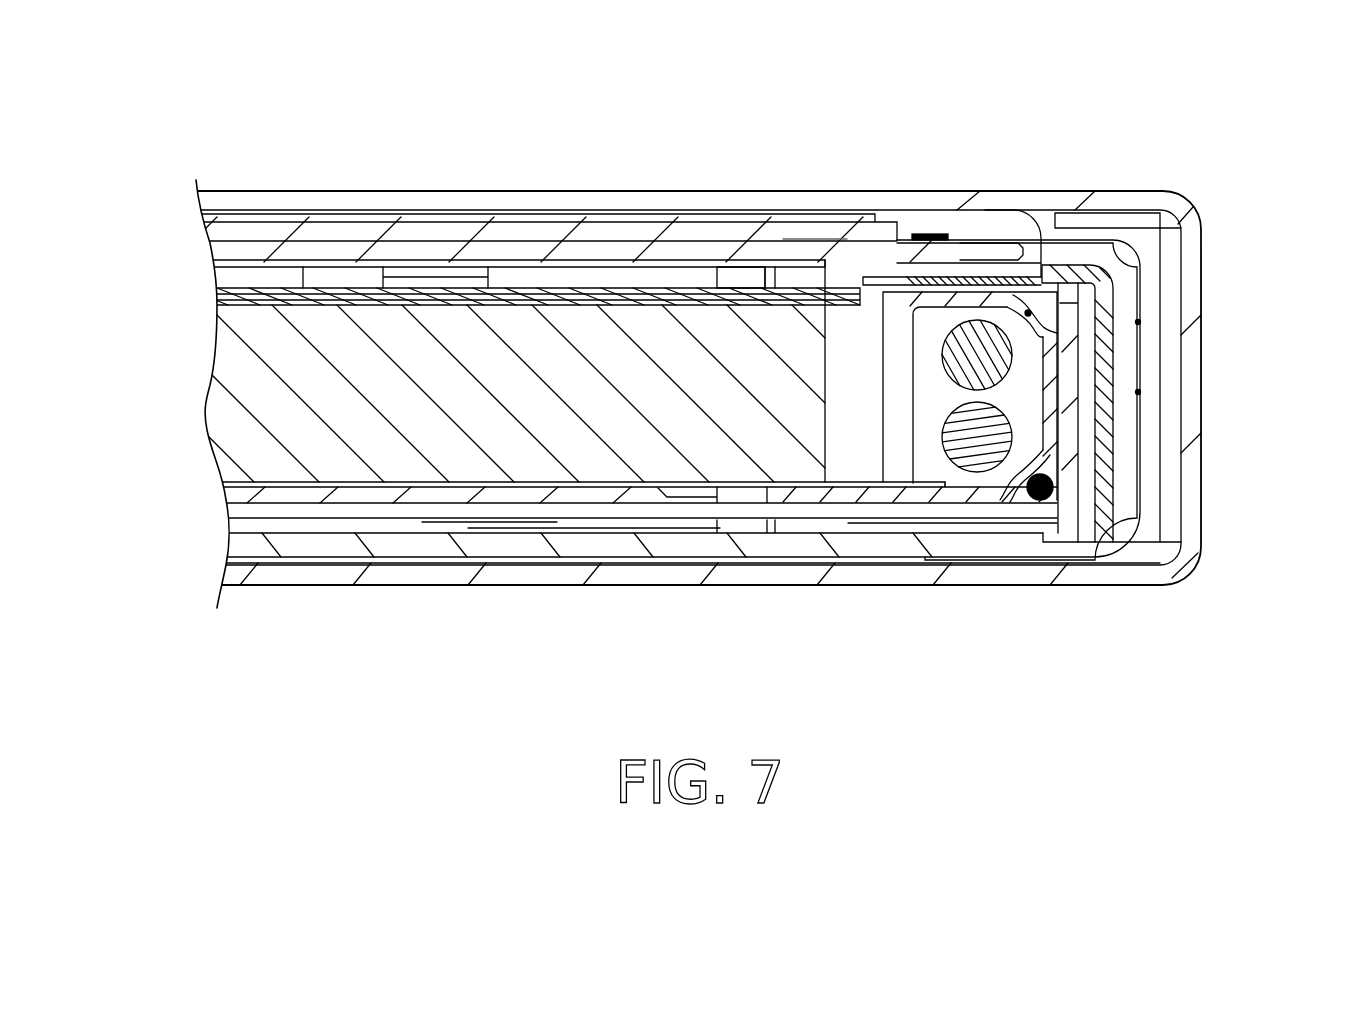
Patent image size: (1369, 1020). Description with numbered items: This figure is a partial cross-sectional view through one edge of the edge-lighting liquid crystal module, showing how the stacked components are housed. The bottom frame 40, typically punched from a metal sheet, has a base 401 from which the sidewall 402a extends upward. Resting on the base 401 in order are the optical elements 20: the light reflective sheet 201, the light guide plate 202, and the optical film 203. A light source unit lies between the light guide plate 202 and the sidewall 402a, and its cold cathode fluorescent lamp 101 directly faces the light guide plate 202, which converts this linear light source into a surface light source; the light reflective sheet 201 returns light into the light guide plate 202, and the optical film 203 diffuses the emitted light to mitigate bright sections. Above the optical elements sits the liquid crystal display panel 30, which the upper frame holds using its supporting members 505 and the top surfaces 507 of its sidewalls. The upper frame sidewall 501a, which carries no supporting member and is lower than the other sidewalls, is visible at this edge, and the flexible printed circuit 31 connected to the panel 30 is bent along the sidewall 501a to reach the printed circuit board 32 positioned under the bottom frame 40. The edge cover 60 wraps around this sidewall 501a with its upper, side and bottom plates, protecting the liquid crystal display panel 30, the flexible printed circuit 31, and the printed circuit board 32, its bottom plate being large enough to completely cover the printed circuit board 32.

The optical elements 20 is at (549, 376).
The light reflective sheet 201 is at (581, 474).
The light guide plate 202 is at (257, 402).
The optical film 203 is at (227, 293).
The liquid crystal display panel 30 is at (877, 253).
The flexible printed circuit 31 is at (1138, 448).
The printed circuit board 32 is at (687, 540).
The bottom frame 40 is at (888, 510).
The base 401 is at (577, 493).
The sidewall 402a is at (1070, 362).
The sidewall 501a is at (1103, 417).
The supporting members 505 is at (747, 277).
The top surfaces 507 is at (1003, 277).
The edge cover 60 is at (1193, 245).
The cold cathode fluorescent lamp 101 is at (982, 450).